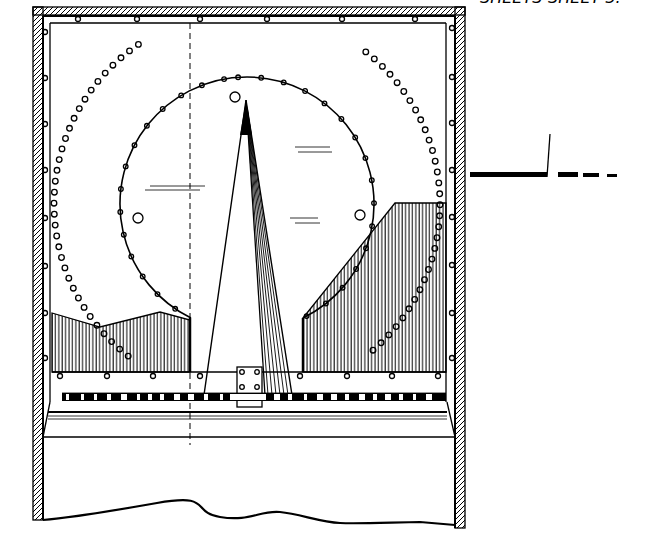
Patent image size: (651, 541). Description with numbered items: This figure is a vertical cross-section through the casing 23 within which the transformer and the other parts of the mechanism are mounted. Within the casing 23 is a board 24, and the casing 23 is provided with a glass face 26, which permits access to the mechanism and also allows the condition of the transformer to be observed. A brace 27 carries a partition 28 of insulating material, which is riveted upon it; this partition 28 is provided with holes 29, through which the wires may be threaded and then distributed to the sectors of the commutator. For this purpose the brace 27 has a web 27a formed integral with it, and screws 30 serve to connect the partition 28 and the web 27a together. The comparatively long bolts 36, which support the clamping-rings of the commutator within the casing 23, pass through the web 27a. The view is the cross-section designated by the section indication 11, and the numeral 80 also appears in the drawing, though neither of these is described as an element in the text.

The section line indicator 11 is at (200, 455).
The casing 23 is at (465, 485).
The board 24 is at (430, 395).
The glass face 26 is at (372, 388).
The brace 27 is at (248, 253).
The web 27a is at (247, 197).
The partition 28 is at (238, 135).
The holes 29 is at (135, 45).
The screws 30 is at (364, 158).
The bolts 36 is at (233, 102).
The rivets 80 is at (133, 246).